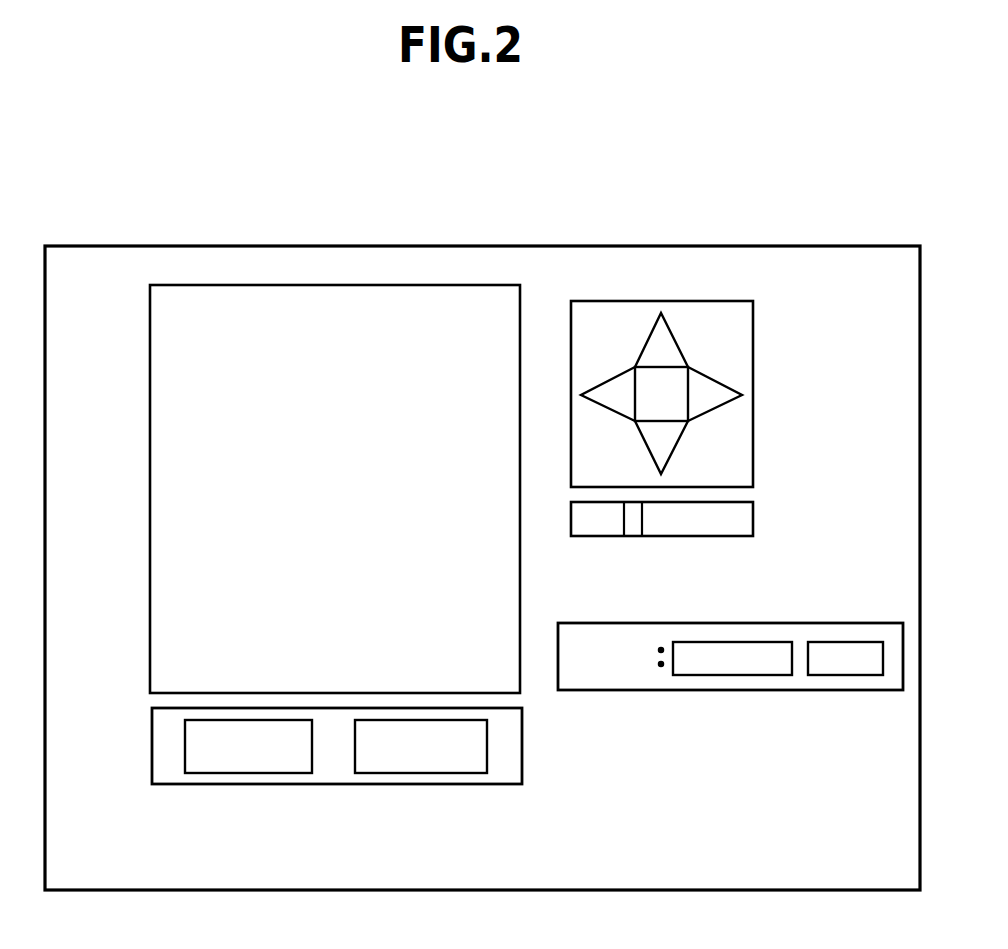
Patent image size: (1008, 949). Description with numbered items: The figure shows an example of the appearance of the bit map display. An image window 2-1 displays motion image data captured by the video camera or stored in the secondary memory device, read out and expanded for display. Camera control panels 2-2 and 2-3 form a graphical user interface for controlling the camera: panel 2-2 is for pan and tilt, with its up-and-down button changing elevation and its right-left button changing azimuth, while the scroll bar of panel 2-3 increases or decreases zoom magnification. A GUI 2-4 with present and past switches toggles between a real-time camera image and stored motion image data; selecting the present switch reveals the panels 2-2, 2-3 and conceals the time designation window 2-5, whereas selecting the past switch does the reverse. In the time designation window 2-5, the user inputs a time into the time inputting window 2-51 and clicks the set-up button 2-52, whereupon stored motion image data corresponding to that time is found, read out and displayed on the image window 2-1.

The image window 2-1 is at (150, 308).
The camera control panel for pan and tilt 2-2 is at (753, 340).
The camera control panel for zoom 2-3 is at (754, 509).
The GUI with present and past buttons 2-4 is at (211, 785).
The time designation window 2-5 is at (751, 623).
The time inputting window 2-51 is at (702, 675).
The set-up button 2-52 is at (846, 675).